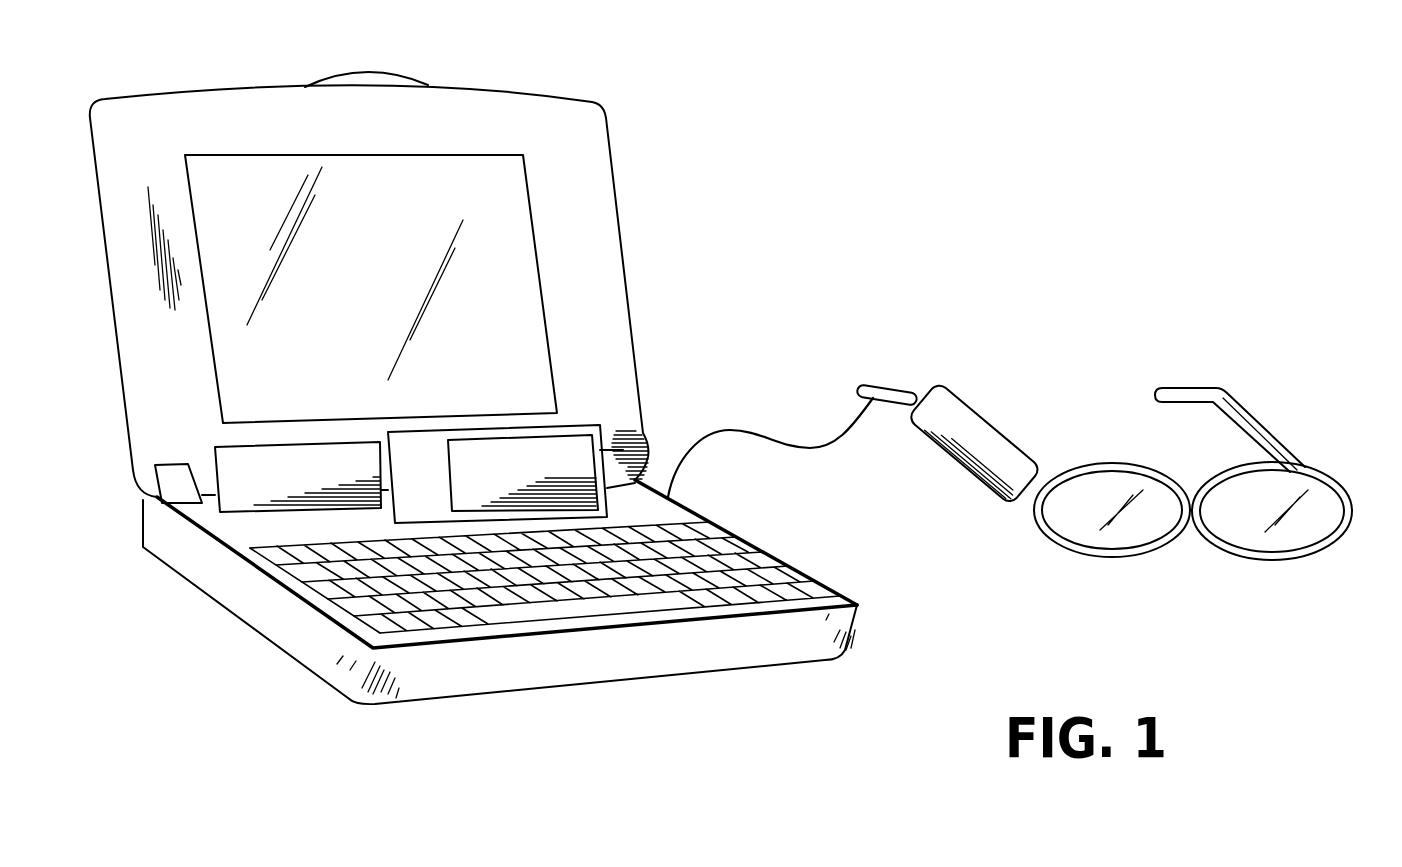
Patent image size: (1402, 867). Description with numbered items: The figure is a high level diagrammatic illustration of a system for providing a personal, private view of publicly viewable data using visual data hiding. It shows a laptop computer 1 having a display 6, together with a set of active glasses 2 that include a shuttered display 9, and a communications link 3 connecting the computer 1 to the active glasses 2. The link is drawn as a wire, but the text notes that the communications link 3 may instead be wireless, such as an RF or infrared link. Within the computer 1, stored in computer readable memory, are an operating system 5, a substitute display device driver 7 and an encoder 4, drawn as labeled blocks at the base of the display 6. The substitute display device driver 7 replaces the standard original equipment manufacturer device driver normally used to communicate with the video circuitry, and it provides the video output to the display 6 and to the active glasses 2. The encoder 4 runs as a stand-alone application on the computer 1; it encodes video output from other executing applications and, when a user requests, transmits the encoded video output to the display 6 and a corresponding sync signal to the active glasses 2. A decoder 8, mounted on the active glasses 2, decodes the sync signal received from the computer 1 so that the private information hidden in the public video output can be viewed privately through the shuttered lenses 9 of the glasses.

The laptop computer 1 is at (152, 530).
The active glasses 2 is at (1193, 431).
The communications link 3 is at (793, 447).
The encoder 4 is at (302, 485).
The operating system 5 is at (420, 452).
The display 6 is at (515, 208).
The substitute display device driver 7 is at (580, 457).
The decoder 8 is at (978, 427).
The shuttered display 9 is at (1120, 560).